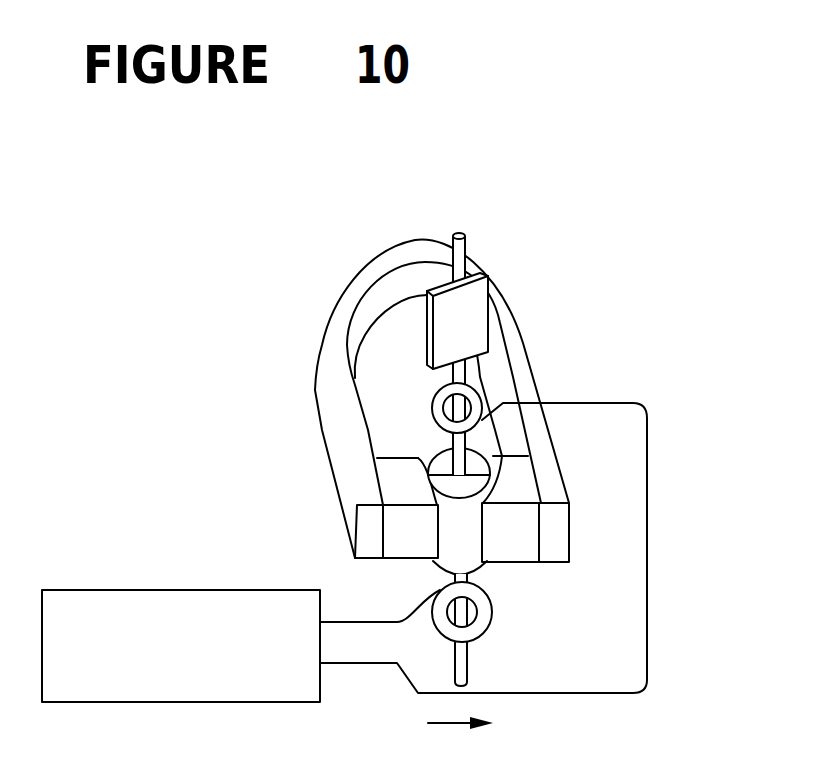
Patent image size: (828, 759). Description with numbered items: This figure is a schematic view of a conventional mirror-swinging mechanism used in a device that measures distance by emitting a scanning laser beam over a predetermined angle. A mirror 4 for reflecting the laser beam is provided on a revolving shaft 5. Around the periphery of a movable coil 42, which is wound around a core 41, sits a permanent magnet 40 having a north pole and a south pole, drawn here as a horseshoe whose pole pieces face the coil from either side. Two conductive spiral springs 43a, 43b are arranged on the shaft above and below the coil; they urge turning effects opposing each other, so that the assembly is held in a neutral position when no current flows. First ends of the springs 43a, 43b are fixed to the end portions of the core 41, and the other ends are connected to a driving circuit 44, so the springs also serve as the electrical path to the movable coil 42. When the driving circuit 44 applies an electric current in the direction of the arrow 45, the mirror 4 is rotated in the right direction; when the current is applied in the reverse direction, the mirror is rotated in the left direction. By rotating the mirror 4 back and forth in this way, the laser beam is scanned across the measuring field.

The revolving shaft 5 is at (461, 258).
The mirror 4 is at (455, 322).
The conductive spiral spring 43a is at (475, 388).
The movable coil 42 is at (490, 463).
The permanent magnet 40 is at (335, 452).
The core 41 is at (484, 566).
The conductive spiral spring 43b is at (493, 620).
The driving circuit 44 is at (232, 590).
The arrow 45 is at (493, 721).